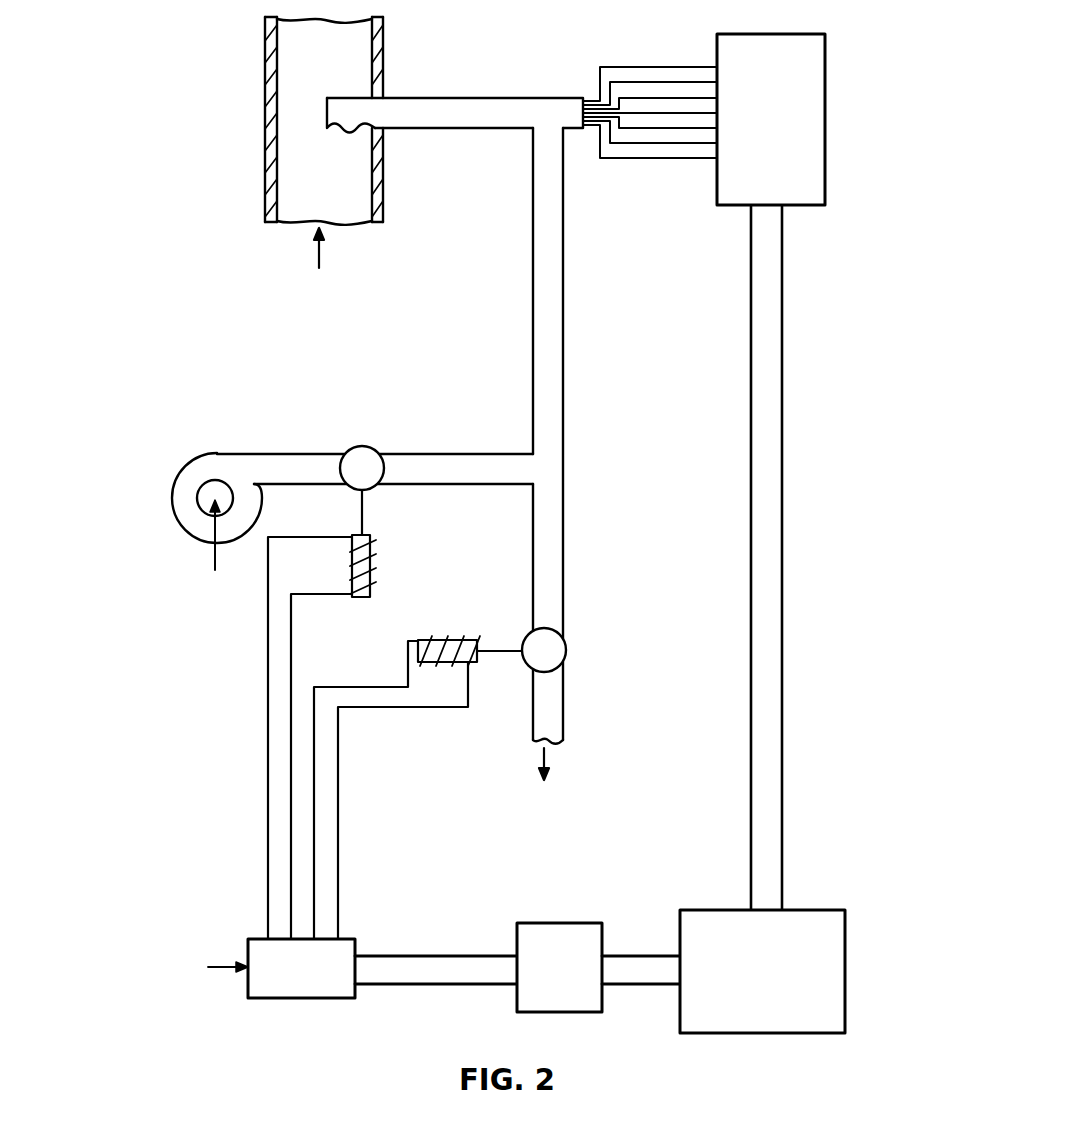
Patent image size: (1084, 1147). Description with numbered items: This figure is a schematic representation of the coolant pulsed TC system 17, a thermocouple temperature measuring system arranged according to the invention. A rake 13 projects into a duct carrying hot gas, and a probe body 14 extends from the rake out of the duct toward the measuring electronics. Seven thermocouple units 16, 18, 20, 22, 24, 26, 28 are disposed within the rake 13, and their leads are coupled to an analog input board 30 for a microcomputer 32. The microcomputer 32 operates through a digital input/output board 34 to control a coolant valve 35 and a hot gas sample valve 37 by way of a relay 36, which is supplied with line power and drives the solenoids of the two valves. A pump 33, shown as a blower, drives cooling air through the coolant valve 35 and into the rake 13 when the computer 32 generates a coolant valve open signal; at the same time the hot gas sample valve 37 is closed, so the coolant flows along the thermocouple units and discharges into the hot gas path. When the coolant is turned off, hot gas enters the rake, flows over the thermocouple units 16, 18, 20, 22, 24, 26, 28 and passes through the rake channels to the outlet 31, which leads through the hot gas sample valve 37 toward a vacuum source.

The rake 13 is at (350, 129).
The probe 14 is at (442, 105).
The thermocouple unit 16 is at (616, 64).
The coolant pulsed TC system 17 is at (640, 499).
The thermocouple unit 18 is at (628, 82).
The thermocouple unit 20 is at (650, 98).
The thermocouple unit 22 is at (680, 113).
The thermocouple unit 24 is at (638, 128).
The thermocouple unit 26 is at (672, 143).
The thermocouple unit 28 is at (705, 158).
The analog input board 30 is at (828, 160).
The outlet 31 is at (552, 712).
The microcomputer 32 is at (713, 910).
The pump 33 is at (233, 452).
The digital input/output board 34 is at (527, 922).
The coolant valve 35 is at (372, 446).
The relay 36 is at (350, 939).
The hot gas sample valve 37 is at (566, 647).